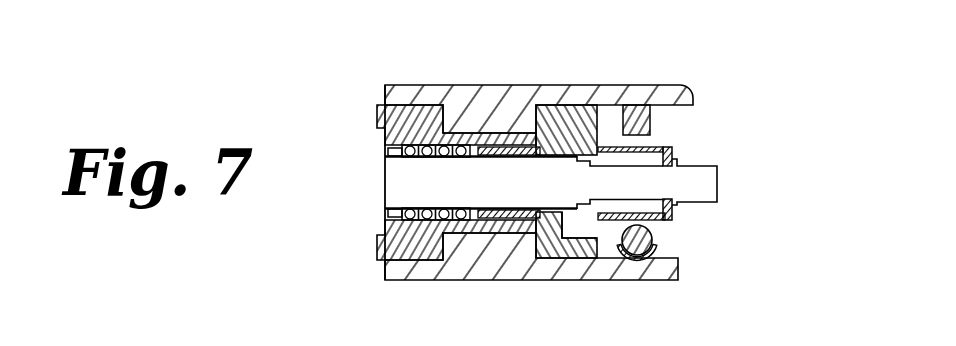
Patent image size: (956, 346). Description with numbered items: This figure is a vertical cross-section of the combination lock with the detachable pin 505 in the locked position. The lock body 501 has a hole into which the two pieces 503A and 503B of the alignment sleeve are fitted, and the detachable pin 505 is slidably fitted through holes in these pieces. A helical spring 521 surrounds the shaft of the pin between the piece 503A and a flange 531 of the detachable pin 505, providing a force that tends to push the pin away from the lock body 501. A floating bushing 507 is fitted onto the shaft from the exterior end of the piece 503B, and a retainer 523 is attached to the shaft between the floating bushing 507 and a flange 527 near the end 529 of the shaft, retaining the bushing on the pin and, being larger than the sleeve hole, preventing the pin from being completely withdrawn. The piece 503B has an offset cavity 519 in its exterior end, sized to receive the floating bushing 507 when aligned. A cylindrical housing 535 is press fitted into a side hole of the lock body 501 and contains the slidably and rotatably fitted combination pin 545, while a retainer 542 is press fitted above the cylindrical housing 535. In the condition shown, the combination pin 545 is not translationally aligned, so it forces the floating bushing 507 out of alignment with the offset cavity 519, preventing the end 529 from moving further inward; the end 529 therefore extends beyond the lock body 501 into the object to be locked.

The lock body 501 is at (425, 86).
The piece of alignment sleeve 503A is at (377, 118).
The piece of alignment sleeve 503B is at (598, 121).
The detachable pin 505 is at (425, 190).
The floating bushing 507 is at (656, 146).
The offset cavity 519 is at (580, 228).
The helical spring 521 is at (403, 154).
The retainer 523 is at (666, 148).
The flange 527 is at (668, 216).
The end of the shaft 529 is at (718, 168).
The flange of the detachable pin 531 is at (386, 153).
The cylindrical housing 535 is at (659, 247).
The retainer 542 is at (651, 123).
The combination pin 545 is at (653, 231).